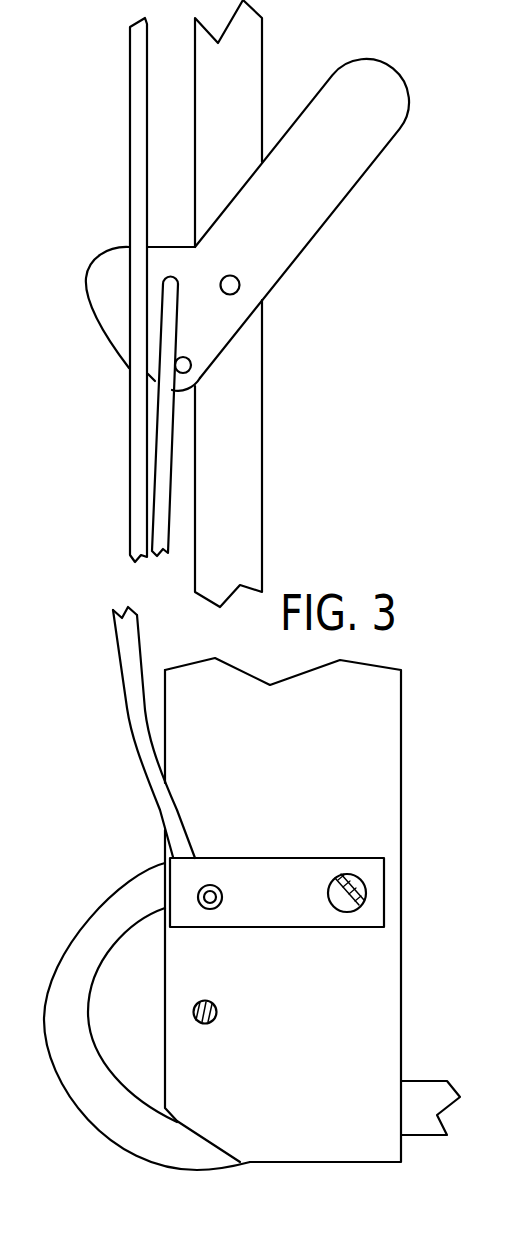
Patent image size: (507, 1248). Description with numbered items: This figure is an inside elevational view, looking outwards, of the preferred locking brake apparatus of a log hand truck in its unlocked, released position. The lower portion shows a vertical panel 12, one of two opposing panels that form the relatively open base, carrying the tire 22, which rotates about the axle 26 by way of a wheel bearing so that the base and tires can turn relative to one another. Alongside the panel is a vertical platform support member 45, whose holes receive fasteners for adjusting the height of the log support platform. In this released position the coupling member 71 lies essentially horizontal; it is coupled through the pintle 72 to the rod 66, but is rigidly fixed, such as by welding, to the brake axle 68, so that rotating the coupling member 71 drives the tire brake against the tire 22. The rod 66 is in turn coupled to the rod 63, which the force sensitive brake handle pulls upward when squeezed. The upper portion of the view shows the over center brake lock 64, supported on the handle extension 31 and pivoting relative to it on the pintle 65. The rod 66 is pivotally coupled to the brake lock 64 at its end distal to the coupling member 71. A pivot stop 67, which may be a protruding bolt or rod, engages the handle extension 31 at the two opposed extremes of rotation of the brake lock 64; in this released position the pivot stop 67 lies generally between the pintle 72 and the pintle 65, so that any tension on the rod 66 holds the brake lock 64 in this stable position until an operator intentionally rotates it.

The vertical panel 12 is at (311, 782).
The tire 22 is at (112, 893).
The axle 26 is at (217, 1012).
The handle extension 31 is at (246, 137).
The vertical platform support member 45 is at (443, 1115).
The rod 63 is at (133, 403).
The over center brake lock 64 is at (338, 172).
The pintle 65 is at (240, 285).
The rod 66 is at (167, 456).
The pivot stop 67 is at (191, 365).
The brake axle 68 is at (365, 888).
The coupling member 71 is at (294, 908).
The pintle 72 is at (200, 888).